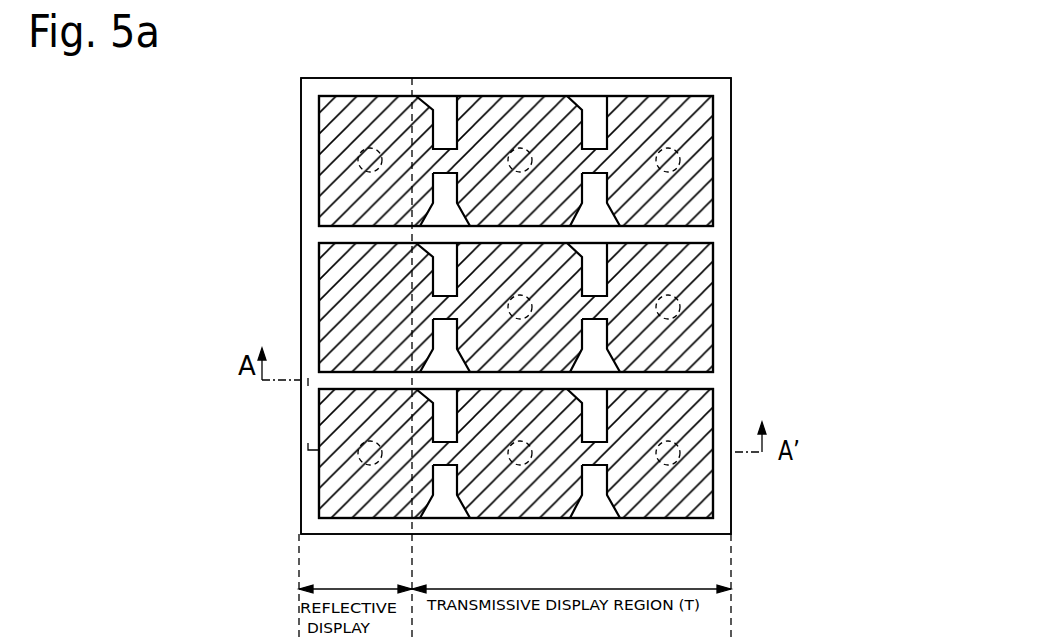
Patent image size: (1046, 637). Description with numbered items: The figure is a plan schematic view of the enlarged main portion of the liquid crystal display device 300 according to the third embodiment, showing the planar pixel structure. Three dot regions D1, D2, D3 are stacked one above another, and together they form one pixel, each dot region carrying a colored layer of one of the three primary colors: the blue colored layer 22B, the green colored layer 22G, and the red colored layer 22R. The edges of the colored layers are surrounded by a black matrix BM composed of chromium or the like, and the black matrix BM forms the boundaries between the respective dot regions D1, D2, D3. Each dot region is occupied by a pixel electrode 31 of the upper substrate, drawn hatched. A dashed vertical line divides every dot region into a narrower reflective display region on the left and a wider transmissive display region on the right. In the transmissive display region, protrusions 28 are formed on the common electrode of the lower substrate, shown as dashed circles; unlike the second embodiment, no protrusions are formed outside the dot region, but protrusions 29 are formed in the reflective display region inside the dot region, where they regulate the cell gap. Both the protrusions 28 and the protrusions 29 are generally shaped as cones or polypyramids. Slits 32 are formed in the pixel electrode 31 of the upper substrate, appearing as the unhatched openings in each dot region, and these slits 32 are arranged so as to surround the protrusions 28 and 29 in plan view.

The liquid crystal display device 300 is at (776, 73).
The pixel electrode 31 is at (713, 127).
The slits 32 is at (453, 127).
The protrusions 28 is at (518, 148).
The protrusions 29 is at (369, 148).
The blue colored layer 22B is at (690, 198).
The green colored layer 22G is at (693, 347).
The red colored layer 22R is at (697, 490).
The black matrix BM is at (303, 243).
The dot region D1 is at (333, 130).
The dot region D2 is at (338, 288).
The dot region D3 is at (330, 408).